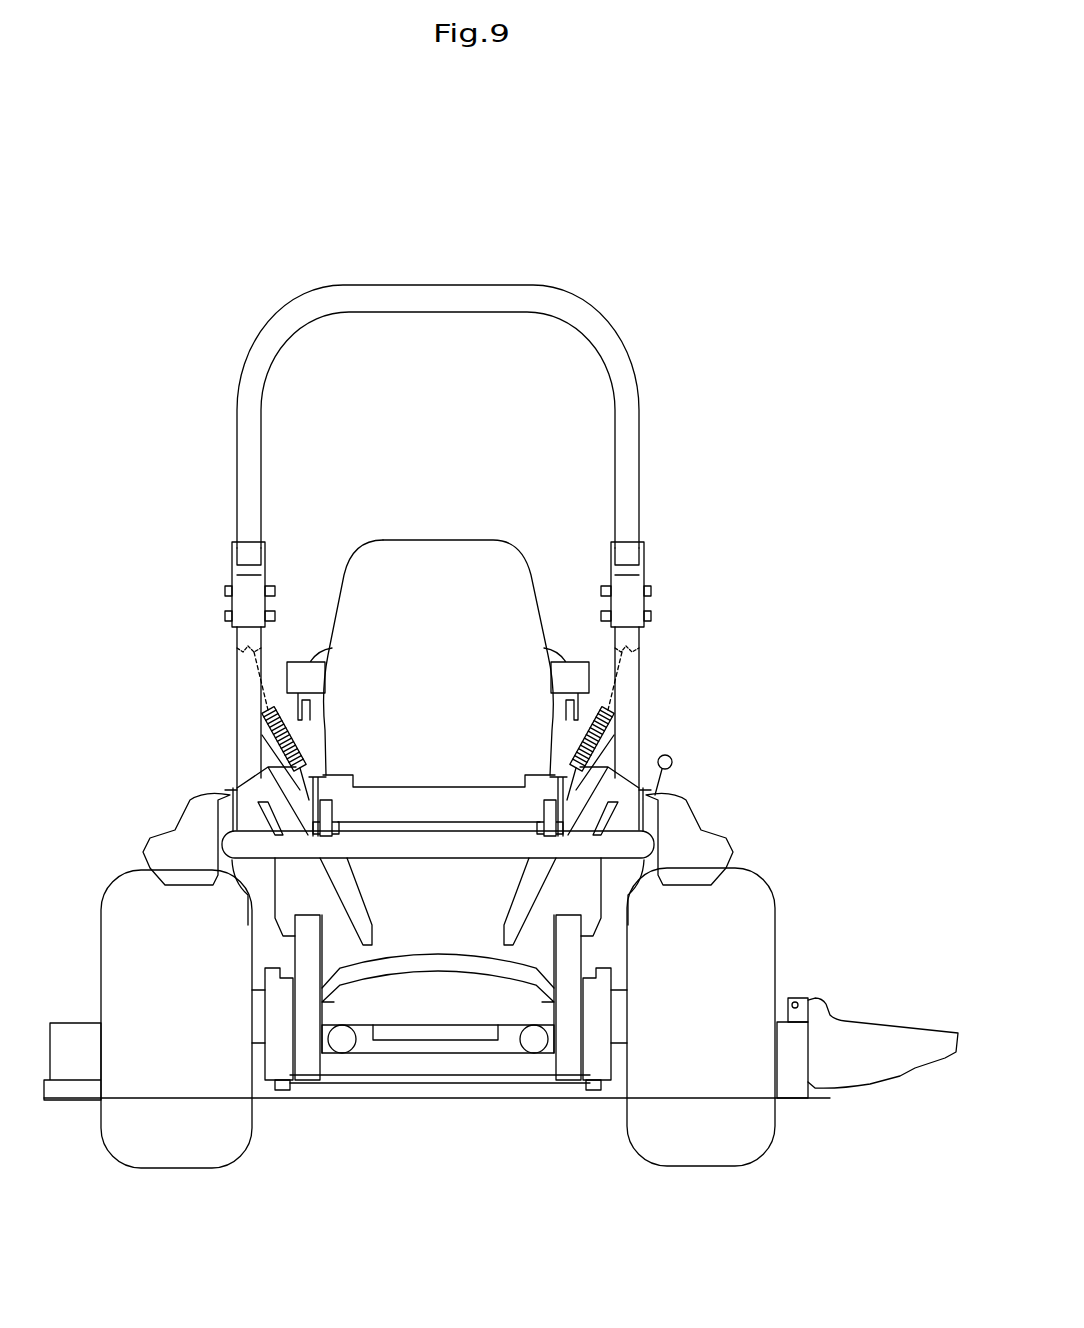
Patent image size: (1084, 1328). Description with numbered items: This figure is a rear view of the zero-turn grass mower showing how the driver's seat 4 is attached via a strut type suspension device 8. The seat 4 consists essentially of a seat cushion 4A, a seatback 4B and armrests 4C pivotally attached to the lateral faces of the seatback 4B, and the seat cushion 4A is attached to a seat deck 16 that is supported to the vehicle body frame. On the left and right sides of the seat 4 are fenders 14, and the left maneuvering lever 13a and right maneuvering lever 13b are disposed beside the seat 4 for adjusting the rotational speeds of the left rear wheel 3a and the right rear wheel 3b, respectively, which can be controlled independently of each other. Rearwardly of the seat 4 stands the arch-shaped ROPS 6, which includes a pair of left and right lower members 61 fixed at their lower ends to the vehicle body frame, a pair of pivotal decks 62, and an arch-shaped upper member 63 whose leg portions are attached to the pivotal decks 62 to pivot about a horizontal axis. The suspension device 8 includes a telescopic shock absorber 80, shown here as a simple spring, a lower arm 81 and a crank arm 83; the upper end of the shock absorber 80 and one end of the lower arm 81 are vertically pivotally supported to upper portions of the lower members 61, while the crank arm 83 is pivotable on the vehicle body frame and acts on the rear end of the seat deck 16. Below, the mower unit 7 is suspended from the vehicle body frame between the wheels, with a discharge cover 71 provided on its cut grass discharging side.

The Rollover Protective Structure (ROPS) 6 is at (584, 299).
The upper member 63 is at (248, 500).
The pivotal decks 62 is at (235, 598).
The lower members 61 is at (246, 690).
The seat 4 is at (439, 628).
The seatback 4B is at (437, 568).
The seat cushion 4A is at (443, 800).
The armrests 4C is at (308, 680).
The left maneuvering lever 13a is at (283, 698).
The right maneuvering lever 13b is at (597, 698).
The telescopic shock absorber 80 is at (266, 742).
The suspension device 8 is at (298, 740).
The lower arm 81 is at (318, 800).
The crank arm 83 is at (332, 817).
The seat deck 16 is at (443, 848).
The mower unit 7 is at (439, 1099).
The fenders 14 is at (185, 834).
The left rear wheel 3a is at (176, 1166).
The right rear wheel 3b is at (703, 1164).
The discharge cover 71 is at (859, 1048).